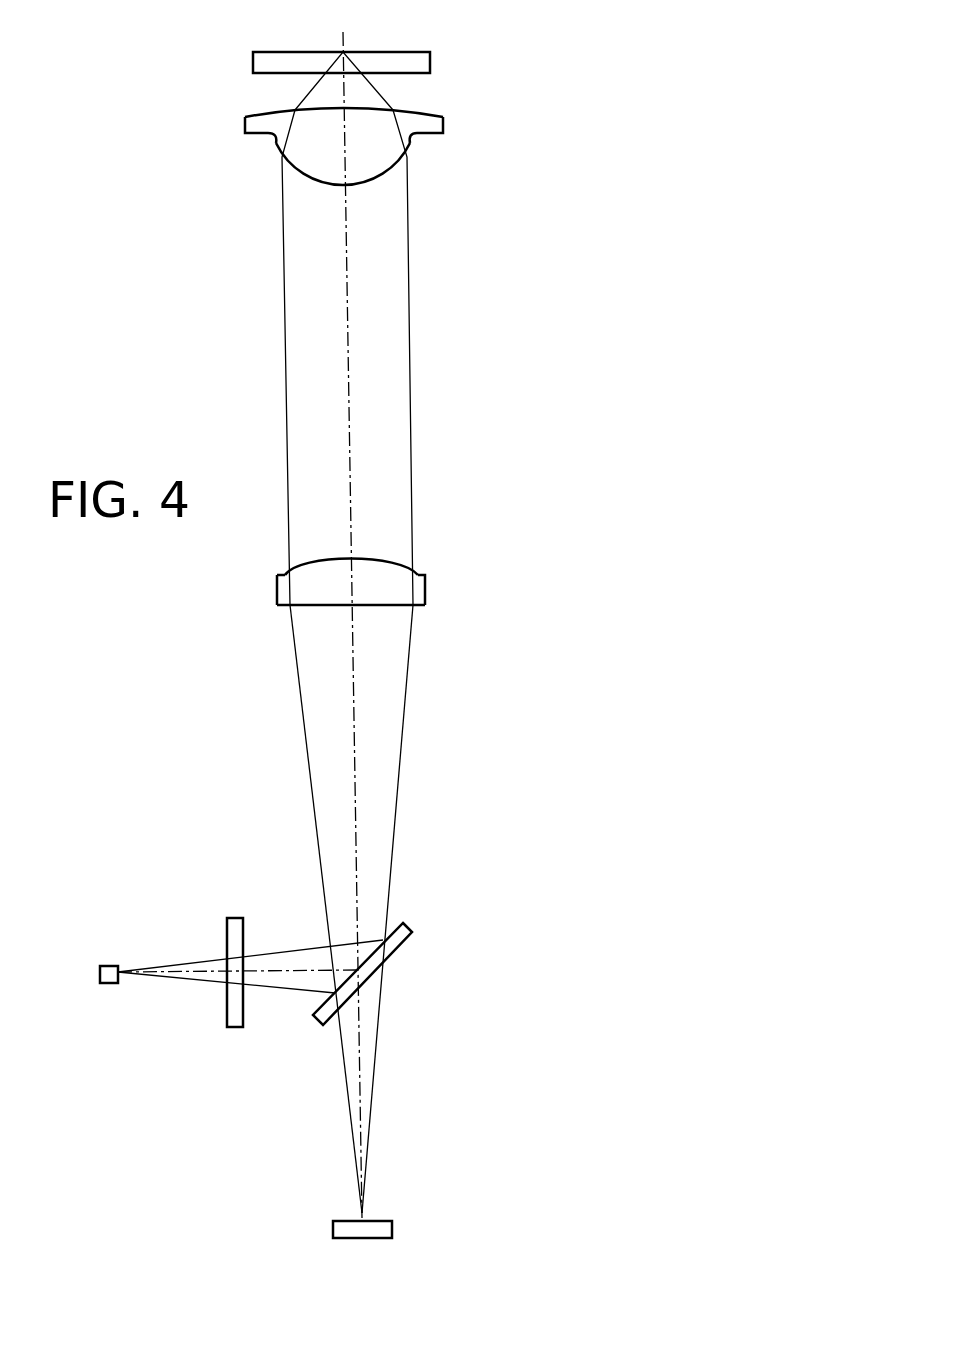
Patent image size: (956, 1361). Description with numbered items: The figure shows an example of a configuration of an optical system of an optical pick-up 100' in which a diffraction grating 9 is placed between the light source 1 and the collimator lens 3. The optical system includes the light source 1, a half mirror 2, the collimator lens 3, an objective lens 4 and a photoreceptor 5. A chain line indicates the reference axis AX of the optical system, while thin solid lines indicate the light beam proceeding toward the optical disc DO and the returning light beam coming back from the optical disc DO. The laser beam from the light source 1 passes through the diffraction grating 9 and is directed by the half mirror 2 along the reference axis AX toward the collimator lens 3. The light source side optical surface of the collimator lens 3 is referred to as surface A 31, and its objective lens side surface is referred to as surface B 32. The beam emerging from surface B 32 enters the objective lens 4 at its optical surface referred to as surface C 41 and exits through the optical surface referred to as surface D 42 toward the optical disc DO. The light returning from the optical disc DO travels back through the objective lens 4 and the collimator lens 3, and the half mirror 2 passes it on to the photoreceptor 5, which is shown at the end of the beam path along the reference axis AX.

The optical system of an optical pick-up 100' is at (333, 619).
The optical disc DO is at (307, 52).
The reference axis AX is at (347, 362).
The light source 1 is at (100, 973).
The half mirror 2 is at (394, 947).
The collimator lens 3 is at (371, 605).
The surface A 31 is at (318, 608).
The surface B 32 is at (388, 560).
The objective lens 4 is at (356, 146).
The surface C 41 is at (416, 203).
The surface D 42 is at (400, 110).
The photoreceptor 5 is at (392, 1223).
The diffraction grating 9 is at (235, 918).